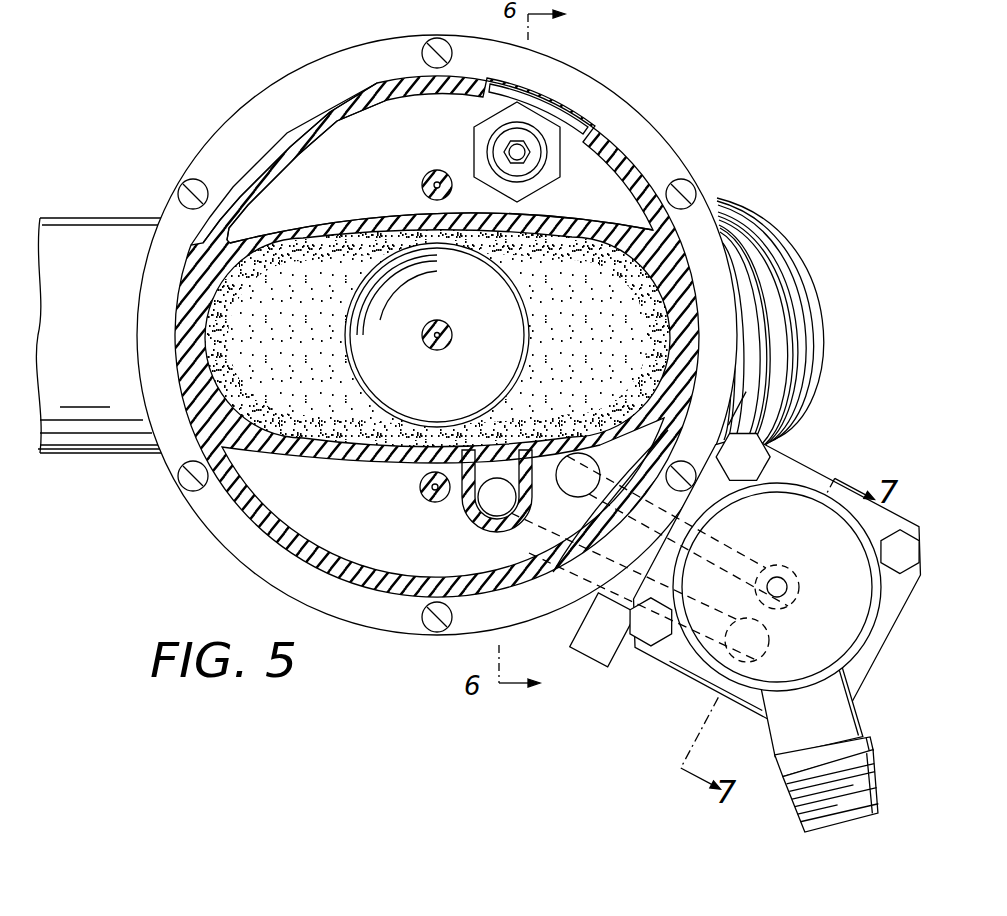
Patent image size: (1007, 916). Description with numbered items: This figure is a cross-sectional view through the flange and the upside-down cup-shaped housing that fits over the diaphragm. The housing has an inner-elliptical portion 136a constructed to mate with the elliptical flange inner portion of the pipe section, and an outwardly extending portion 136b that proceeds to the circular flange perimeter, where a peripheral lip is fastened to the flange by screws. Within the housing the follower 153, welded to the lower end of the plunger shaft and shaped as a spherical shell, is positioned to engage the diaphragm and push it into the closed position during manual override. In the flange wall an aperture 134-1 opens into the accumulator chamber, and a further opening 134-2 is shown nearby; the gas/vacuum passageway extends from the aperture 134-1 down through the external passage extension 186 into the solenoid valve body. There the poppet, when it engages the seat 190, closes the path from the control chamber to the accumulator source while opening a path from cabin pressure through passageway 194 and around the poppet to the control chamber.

The inner-elliptical portion 136a is at (362, 99).
The outwardly extending portion 136b is at (385, 213).
The follower 153 is at (510, 334).
The aperture 134-1 is at (591, 457).
The passage pocket 134-2 is at (483, 527).
The passageway 194 is at (787, 578).
The seat 190 is at (800, 597).
The external passage extension 186 is at (771, 648).